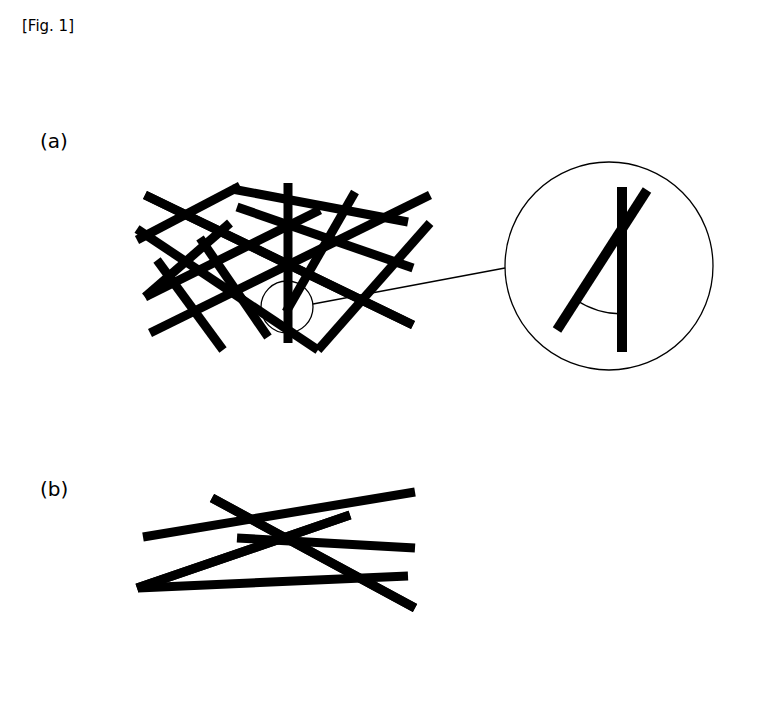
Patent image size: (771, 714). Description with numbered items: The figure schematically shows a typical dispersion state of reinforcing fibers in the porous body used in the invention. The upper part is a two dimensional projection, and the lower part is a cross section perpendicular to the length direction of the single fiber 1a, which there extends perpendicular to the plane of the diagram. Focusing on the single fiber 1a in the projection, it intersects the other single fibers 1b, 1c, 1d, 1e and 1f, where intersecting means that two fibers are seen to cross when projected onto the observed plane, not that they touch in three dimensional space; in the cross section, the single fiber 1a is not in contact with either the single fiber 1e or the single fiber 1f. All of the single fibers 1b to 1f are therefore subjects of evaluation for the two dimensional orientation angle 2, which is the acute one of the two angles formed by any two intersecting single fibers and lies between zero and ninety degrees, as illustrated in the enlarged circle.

The single fiber 1a is at (289, 344).
The single fiber 1b is at (267, 338).
The single fiber 1c is at (356, 193).
The single fiber 1d is at (263, 200).
The single fiber 1e is at (414, 327).
The single fiber 1f is at (157, 335).
The two dimensional orientation angle 2 is at (598, 327).